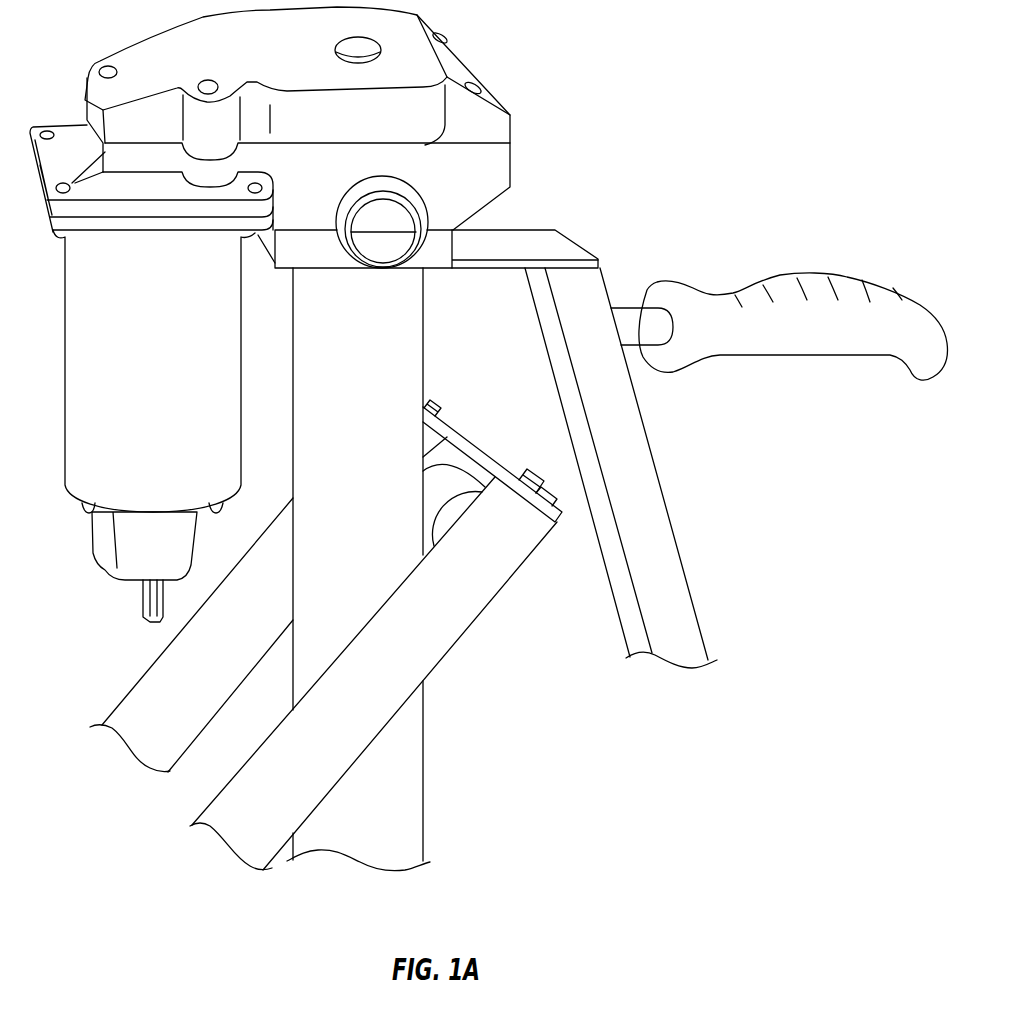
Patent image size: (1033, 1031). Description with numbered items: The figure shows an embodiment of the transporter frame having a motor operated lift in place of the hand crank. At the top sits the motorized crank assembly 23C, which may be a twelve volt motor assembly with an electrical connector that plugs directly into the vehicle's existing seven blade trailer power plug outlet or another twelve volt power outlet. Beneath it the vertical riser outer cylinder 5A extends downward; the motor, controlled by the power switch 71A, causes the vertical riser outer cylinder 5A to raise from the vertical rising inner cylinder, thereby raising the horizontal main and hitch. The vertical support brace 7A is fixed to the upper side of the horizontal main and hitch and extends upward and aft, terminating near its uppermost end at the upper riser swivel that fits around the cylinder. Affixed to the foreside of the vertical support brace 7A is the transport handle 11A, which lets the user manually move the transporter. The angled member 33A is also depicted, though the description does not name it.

The vertical riser outer cylinder 5A is at (426, 768).
The vertical support brace 7A is at (663, 502).
The transport handle 11A is at (853, 357).
The motorized crank assembly 23C is at (465, 62).
The angled guide member 33A is at (277, 753).
The power switch 71A is at (143, 595).